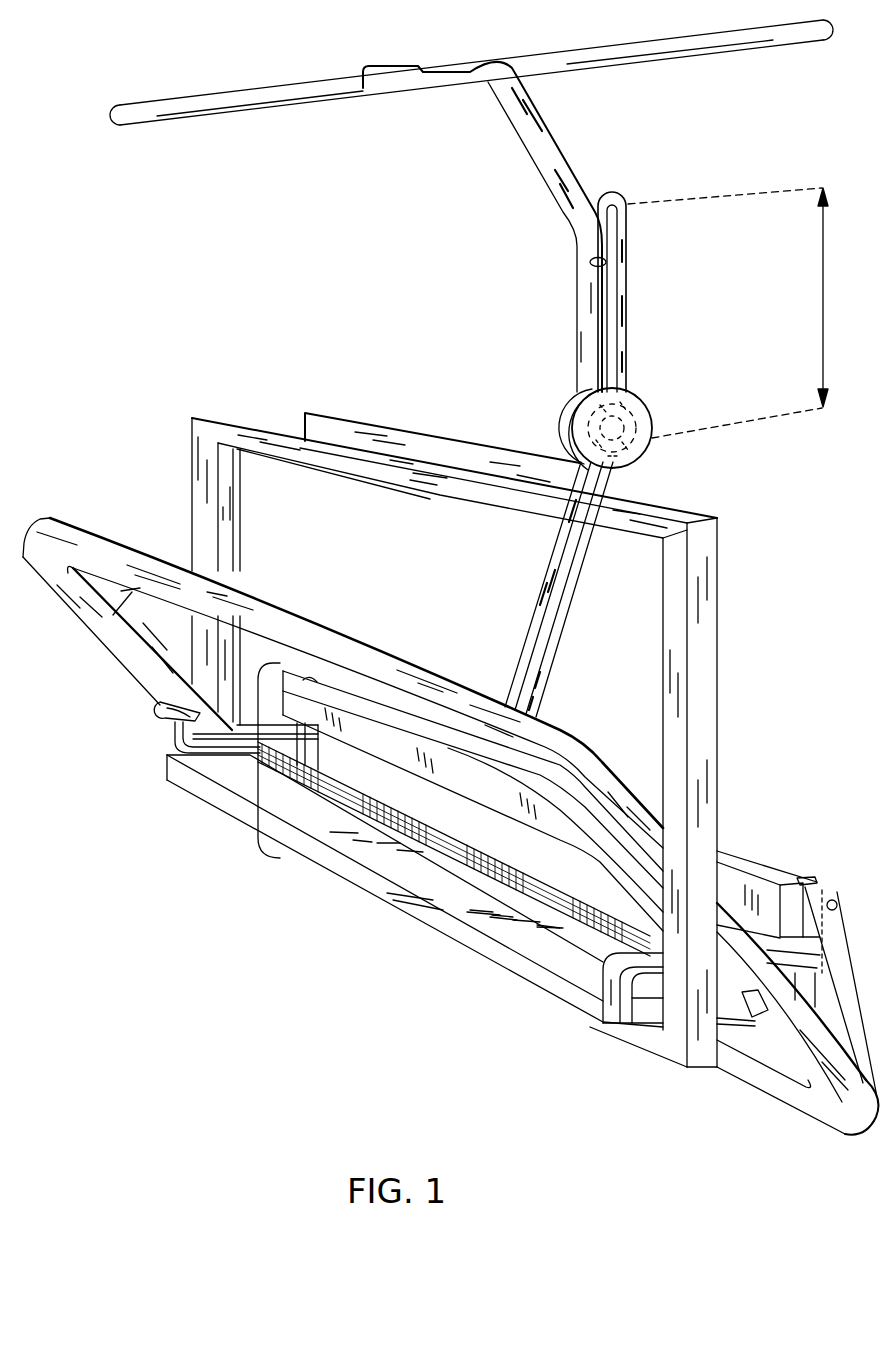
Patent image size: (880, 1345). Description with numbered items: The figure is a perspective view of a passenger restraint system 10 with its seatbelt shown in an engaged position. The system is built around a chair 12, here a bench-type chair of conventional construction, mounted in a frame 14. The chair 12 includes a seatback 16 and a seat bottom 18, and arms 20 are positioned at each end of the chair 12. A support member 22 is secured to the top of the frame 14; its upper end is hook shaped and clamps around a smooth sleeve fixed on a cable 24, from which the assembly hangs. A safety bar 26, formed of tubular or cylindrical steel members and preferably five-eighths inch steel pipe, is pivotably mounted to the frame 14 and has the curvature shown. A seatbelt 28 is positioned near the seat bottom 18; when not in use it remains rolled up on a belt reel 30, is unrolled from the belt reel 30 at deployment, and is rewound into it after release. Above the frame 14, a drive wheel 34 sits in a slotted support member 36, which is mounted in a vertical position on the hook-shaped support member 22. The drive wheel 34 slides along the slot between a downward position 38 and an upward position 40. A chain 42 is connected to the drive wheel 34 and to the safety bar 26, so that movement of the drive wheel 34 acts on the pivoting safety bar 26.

The passenger restraint system 10 is at (264, 972).
The chair 12 is at (165, 757).
The frame 14 is at (707, 678).
The seatback 16 is at (373, 740).
The seat bottom 18 is at (356, 882).
The arms 20 is at (560, 998).
The support member 22 is at (553, 146).
The cable 24 is at (380, 91).
The safety bar 26 is at (572, 753).
The seatbelt 28 is at (500, 893).
The belt reel 30 is at (158, 718).
The drive wheel 34 is at (633, 427).
The slotted support member 36 is at (620, 309).
The downward position 38 is at (760, 414).
The upward position 40 is at (748, 284).
The chain 42 is at (560, 625).